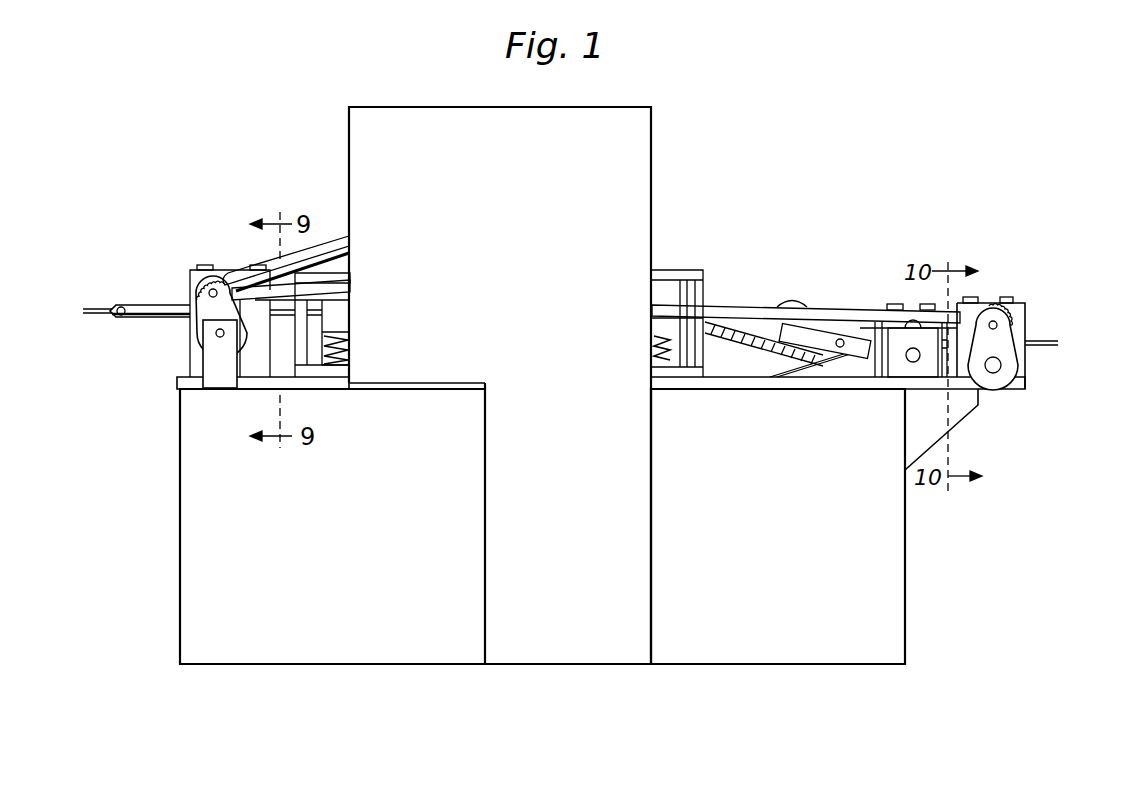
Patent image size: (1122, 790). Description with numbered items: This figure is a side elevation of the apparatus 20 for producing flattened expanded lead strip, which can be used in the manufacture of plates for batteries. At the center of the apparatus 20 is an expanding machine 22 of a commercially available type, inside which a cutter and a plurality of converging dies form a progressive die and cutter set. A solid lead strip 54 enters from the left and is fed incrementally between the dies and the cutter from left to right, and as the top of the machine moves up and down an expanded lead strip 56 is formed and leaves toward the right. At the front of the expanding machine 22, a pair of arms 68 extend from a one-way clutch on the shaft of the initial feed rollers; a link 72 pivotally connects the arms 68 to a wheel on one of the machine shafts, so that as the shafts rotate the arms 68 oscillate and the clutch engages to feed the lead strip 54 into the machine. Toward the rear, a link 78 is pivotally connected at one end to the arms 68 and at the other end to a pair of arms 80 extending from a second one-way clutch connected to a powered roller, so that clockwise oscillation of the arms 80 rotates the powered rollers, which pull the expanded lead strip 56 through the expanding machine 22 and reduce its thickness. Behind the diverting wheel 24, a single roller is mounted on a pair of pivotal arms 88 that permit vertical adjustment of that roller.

The apparatus 20 is at (336, 121).
The expanding machine 22 is at (642, 125).
The diverting wheel 24 is at (795, 303).
The lead strip 54 is at (92, 314).
The expanded lead strip 56 is at (1040, 340).
The arms 68 is at (193, 328).
The link 72 is at (336, 250).
The link 78 is at (733, 312).
The arms 80 is at (1015, 365).
The arms 88 is at (853, 343).